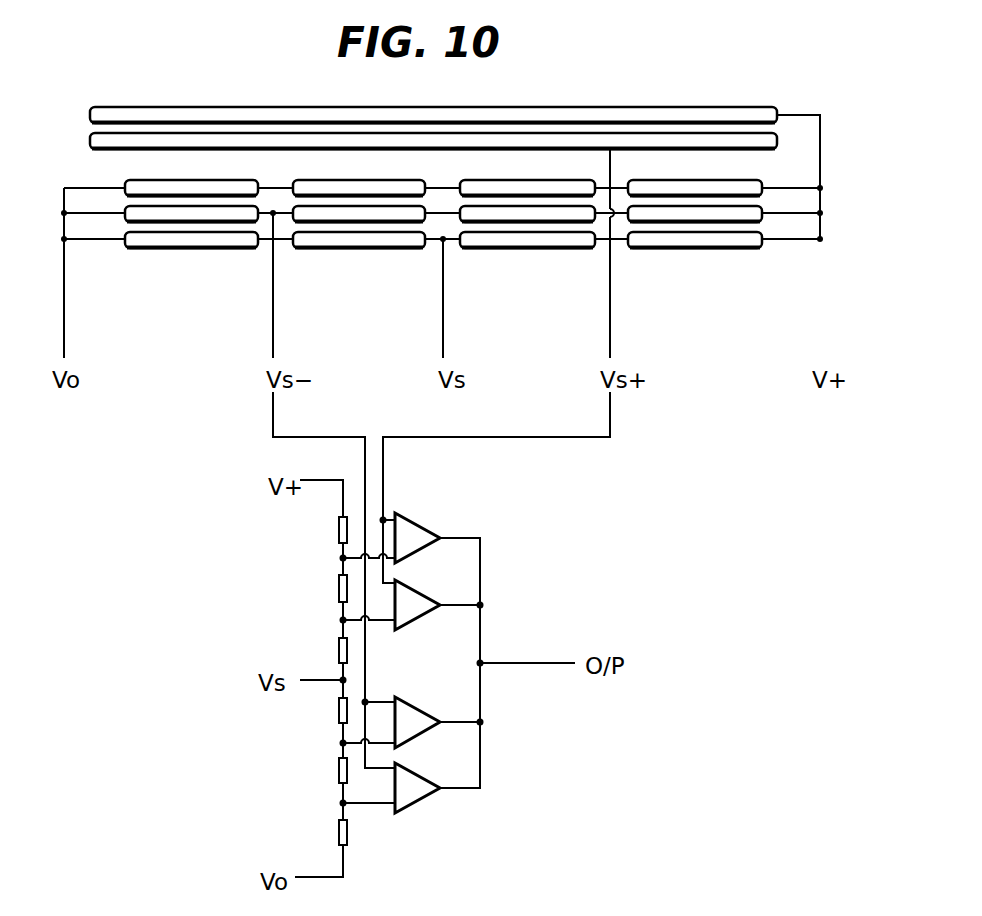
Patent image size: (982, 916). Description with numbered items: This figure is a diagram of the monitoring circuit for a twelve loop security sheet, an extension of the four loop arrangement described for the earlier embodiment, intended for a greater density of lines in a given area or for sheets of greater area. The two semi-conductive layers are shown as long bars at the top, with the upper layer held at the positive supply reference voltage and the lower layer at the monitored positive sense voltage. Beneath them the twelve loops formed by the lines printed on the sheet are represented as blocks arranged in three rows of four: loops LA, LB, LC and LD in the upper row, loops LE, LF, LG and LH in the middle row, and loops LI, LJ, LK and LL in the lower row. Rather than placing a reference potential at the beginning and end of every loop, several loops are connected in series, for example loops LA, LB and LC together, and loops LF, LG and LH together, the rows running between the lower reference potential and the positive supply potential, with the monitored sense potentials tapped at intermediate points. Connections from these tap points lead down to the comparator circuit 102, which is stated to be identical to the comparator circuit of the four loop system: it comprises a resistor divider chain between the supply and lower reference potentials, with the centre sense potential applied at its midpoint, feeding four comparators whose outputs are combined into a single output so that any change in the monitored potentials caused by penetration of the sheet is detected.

The comparator circuit 102 is at (512, 574).
The first loop LA is at (203, 188).
The second loop LB is at (362, 188).
The third loop LC is at (535, 188).
The fourth loop LD is at (712, 188).
The loop LE is at (137, 213).
The loop LF is at (315, 213).
The loop LG is at (477, 213).
The loop LH is at (640, 213).
The loop LI is at (210, 239).
The loop LJ is at (385, 239).
The loop LK is at (555, 239).
The loop LL is at (732, 239).